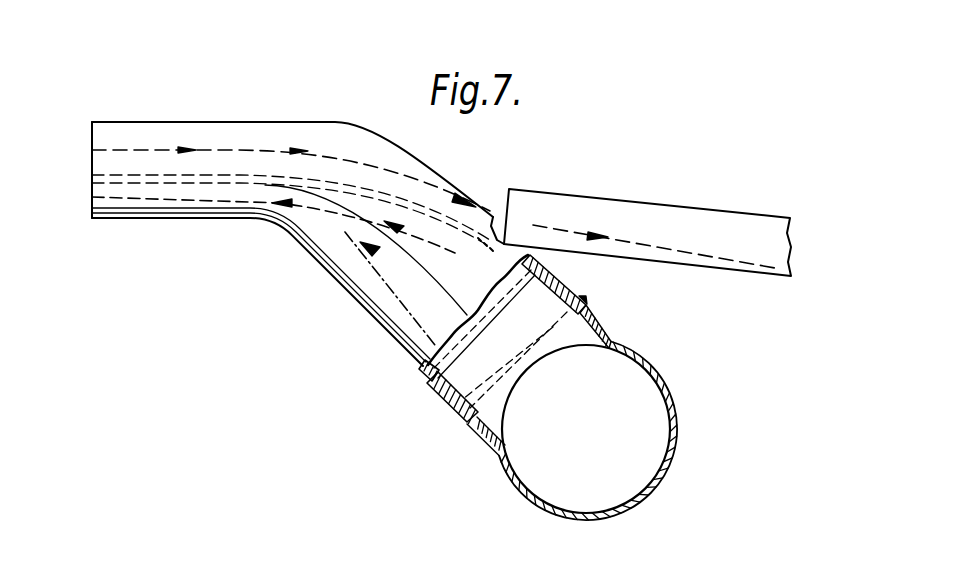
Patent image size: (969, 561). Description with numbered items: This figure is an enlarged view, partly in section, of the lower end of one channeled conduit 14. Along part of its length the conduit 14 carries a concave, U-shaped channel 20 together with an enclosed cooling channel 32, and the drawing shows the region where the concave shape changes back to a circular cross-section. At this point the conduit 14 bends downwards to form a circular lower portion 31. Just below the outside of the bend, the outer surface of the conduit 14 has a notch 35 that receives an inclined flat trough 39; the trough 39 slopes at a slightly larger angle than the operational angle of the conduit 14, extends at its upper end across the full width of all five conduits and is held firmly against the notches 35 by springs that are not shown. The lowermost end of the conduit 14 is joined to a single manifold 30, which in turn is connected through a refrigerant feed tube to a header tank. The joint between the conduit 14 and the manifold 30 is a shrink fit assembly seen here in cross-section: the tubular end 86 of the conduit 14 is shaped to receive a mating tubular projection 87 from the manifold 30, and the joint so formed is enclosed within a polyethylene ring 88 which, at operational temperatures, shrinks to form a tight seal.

The conduit 14 is at (173, 112).
The concave channel 20 is at (281, 133).
The manifold 30 is at (600, 368).
The circular lower portion 31 is at (348, 257).
The enclosed cooling channel 32 is at (206, 190).
The notch 35 is at (494, 216).
The inclined flat trough 39 is at (601, 197).
The tubular end 86 is at (425, 372).
The tubular projection 87 is at (493, 443).
The polyethylene ring 88 is at (442, 407).